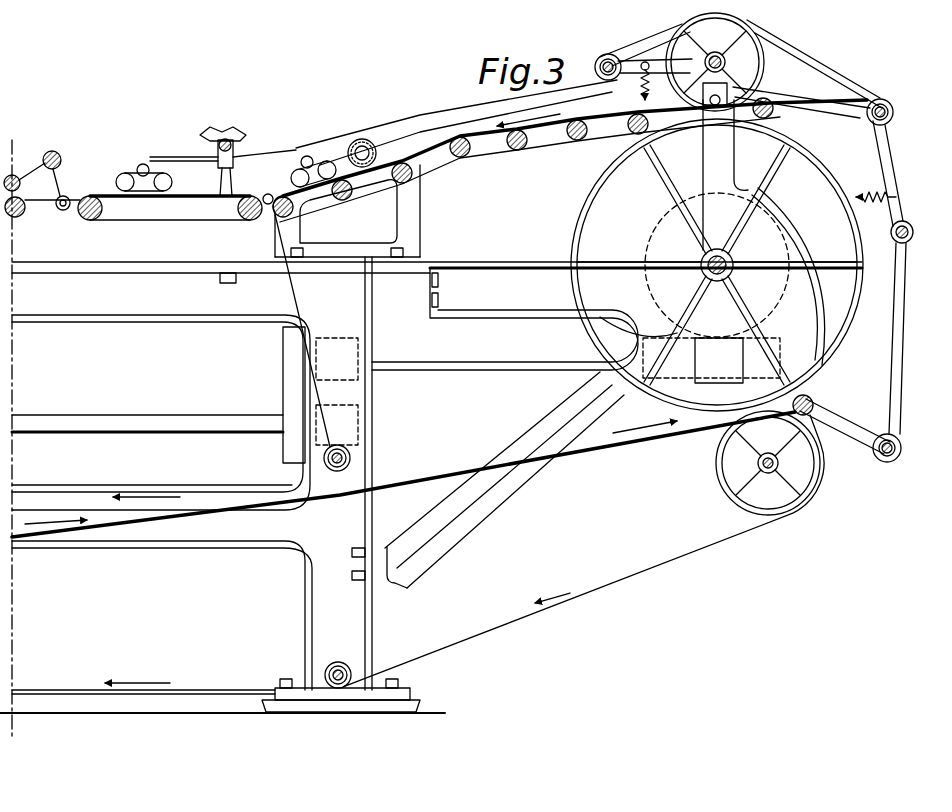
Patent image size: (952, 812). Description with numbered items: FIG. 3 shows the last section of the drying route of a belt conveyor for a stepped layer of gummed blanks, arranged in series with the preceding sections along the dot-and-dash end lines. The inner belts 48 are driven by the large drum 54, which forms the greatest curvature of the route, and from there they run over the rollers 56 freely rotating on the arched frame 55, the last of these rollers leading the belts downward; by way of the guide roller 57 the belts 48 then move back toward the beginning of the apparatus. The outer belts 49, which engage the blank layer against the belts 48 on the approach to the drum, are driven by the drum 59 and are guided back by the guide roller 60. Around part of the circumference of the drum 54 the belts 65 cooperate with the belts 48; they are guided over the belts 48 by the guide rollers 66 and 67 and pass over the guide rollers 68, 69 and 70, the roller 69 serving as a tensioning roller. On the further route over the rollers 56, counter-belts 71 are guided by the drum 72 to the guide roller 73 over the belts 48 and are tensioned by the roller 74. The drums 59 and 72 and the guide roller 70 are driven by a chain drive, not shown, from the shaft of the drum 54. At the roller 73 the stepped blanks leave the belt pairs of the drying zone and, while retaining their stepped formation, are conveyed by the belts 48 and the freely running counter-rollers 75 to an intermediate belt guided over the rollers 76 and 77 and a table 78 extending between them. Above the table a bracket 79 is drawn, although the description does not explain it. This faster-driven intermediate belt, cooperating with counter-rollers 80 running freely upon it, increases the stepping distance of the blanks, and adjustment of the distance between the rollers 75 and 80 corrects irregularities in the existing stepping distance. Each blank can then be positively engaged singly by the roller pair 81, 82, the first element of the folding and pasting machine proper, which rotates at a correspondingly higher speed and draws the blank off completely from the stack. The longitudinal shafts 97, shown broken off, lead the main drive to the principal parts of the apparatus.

The inner belts 48 is at (452, 150).
The outer belts 49 is at (340, 497).
The drum 54 is at (632, 172).
The arched frame 55 is at (496, 148).
The rollers 56 is at (527, 142).
The guide roller 57 is at (350, 458).
The drum 59 is at (716, 470).
The guide roller 60 is at (338, 662).
The belts 65 is at (893, 326).
The guide roller 66 is at (815, 399).
The guide roller 67 is at (774, 112).
The guide roller 68 is at (892, 110).
The tensioning roller 69 is at (904, 244).
The guide roller 70 is at (894, 460).
The counter-belts 71 is at (445, 150).
The drum 72 is at (750, 36).
The guide roller 73 is at (374, 149).
The tensioning roller 74 is at (605, 57).
The counter-rollers 75 is at (312, 160).
The roller 76 is at (251, 220).
The roller 77 is at (88, 220).
The table 78 is at (170, 209).
The clamp bracket 79 is at (212, 170).
The counter-rollers 80 is at (135, 172).
The roller 81 is at (16, 217).
The roller 82 is at (14, 175).
The longitudinal shafts 97 is at (135, 415).